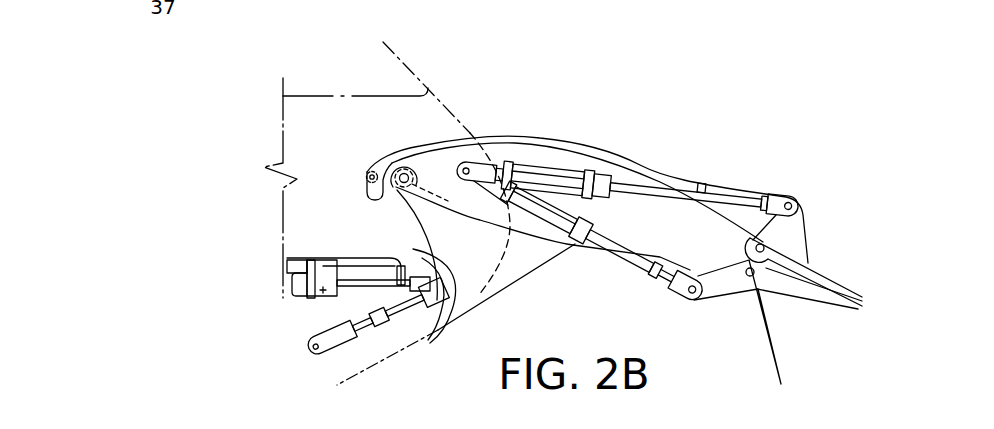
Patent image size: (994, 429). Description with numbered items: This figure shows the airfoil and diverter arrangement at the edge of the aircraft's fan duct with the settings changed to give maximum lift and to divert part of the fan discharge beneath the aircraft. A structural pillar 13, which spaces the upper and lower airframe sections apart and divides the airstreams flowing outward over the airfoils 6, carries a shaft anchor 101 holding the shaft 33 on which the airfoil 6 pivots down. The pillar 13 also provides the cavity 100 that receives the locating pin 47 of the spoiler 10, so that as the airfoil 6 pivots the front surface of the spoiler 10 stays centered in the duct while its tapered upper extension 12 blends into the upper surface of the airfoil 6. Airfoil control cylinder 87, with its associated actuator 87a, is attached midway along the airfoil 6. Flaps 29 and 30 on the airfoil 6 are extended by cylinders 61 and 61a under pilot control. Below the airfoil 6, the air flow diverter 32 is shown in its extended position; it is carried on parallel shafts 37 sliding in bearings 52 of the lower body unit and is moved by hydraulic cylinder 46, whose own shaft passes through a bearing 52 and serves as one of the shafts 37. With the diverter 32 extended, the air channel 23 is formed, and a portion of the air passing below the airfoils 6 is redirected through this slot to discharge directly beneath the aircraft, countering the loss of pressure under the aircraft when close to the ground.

The airfoil 6 is at (638, 150).
The spoiler 10 is at (423, 149).
The upper extension of spoiler 12 is at (513, 137).
The structural pillar 13 is at (333, 106).
The air channel 23 is at (424, 322).
The airfoil flap 29 is at (767, 358).
The airfoil flap 30 is at (822, 272).
The air flow diverter 32 is at (455, 305).
The shaft 33 is at (407, 233).
The shaft 37 is at (406, 316).
The hydraulic cylinder 46 is at (324, 328).
The locating pin 47 is at (370, 169).
The bearing 52 is at (377, 329).
The cylinder 61 is at (587, 195).
The cylinder 61a is at (564, 164).
The airfoil control cylinder 87 is at (332, 298).
The actuator 87a is at (300, 258).
The cavity 100 is at (362, 192).
The shaft anchor 101 is at (449, 198).